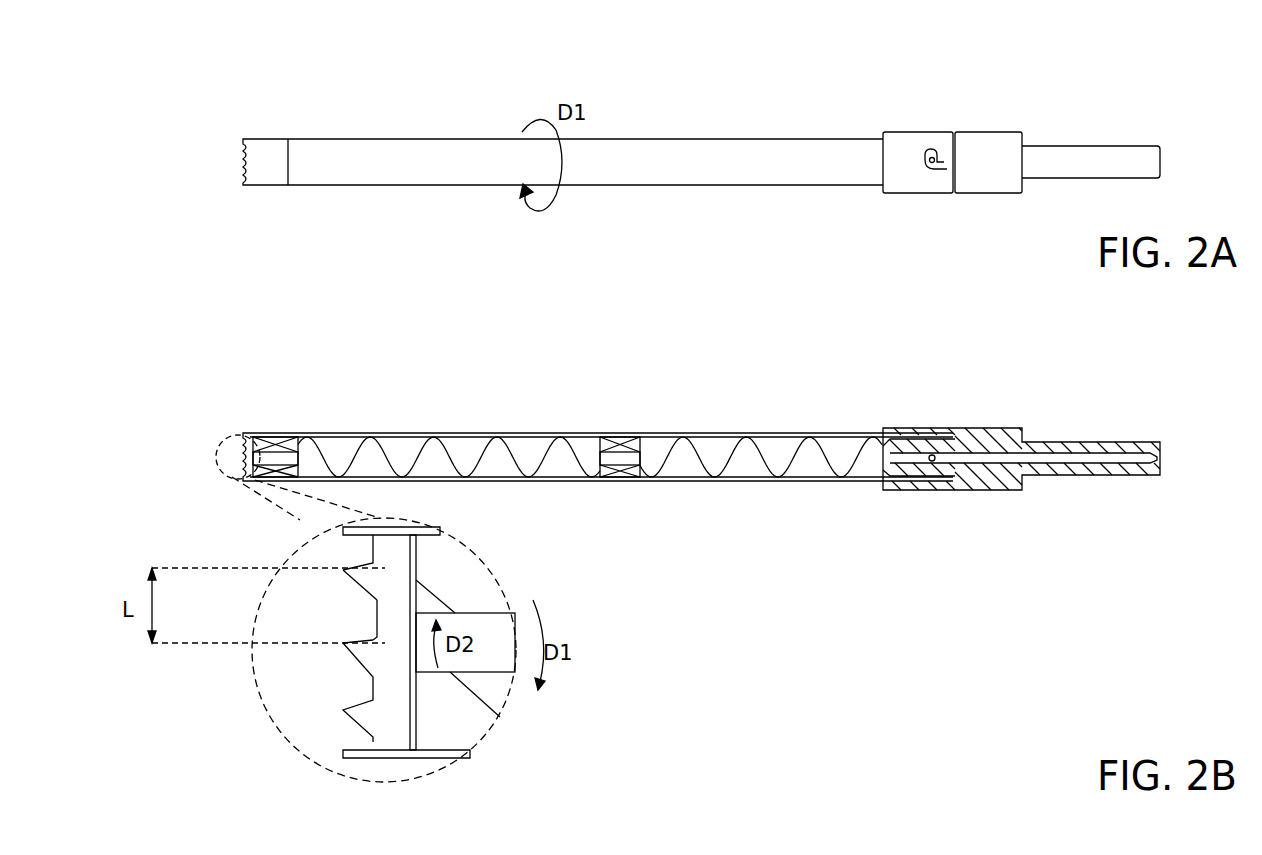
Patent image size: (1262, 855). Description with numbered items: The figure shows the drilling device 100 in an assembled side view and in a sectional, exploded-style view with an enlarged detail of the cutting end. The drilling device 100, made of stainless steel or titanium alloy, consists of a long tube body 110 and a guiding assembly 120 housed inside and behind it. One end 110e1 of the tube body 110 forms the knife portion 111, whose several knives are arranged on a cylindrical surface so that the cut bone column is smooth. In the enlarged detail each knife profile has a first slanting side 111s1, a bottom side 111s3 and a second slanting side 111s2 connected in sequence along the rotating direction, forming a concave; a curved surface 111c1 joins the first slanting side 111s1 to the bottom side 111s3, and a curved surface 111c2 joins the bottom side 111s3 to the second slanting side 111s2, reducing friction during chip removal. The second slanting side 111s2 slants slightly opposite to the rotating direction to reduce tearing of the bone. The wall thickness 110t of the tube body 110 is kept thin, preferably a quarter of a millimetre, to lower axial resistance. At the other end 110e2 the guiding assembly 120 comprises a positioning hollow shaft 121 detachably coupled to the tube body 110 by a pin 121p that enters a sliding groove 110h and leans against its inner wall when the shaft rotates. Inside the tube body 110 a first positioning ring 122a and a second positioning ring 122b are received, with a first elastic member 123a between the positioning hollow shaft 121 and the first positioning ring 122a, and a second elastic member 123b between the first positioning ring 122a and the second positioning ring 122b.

In FIG. 2A, the drilling device 100 is at (1248, 64).
In FIG. 2B, the drilling device 100 is at (1248, 338).
In FIG. 2A, the tube body 110 is at (546, 118).
In FIG. 2B, the tube body 110 is at (580, 448).
In FIG. 2A, the end of tube body 110e1 is at (272, 128).
In FIG. 2B, the end of tube body 110e1 is at (277, 418).
In FIG. 2A, the other end of tube body 110e2 is at (912, 114).
In FIG. 2B, the other end of tube body 110e2 is at (1001, 396).
In FIG. 2A, the sliding groove 110h is at (941, 150).
In FIG. 2B, the wall thickness 110t is at (470, 750).
In FIG. 2A, the knife portion 111 is at (243, 148).
In FIG. 2B, the knife portion 111 is at (243, 443).
In FIG. 2B, the first slanting side 111s1 is at (360, 578).
In FIG. 2B, the curved surface 111c1 is at (376, 600).
In FIG. 2B, the bottom side 111s3 is at (378, 618).
In FIG. 2B, the curved surface 111c2 is at (370, 640).
In FIG. 2B, the second slanting side 111s2 is at (350, 645).
In FIG. 2B, the guiding assembly 120 is at (767, 348).
In FIG. 2A, the positioning hollow shaft 121 is at (1101, 160).
In FIG. 2B, the positioning hollow shaft 121 is at (945, 432).
In FIG. 2A, the pin 121p is at (932, 162).
In FIG. 2B, the pin 121p is at (932, 462).
In FIG. 2B, the first positioning ring 122a is at (616, 435).
In FIG. 2B, the second positioning ring 122b is at (298, 440).
In FIG. 2B, the first elastic member 123a is at (730, 460).
In FIG. 2B, the second elastic member 123b is at (515, 460).